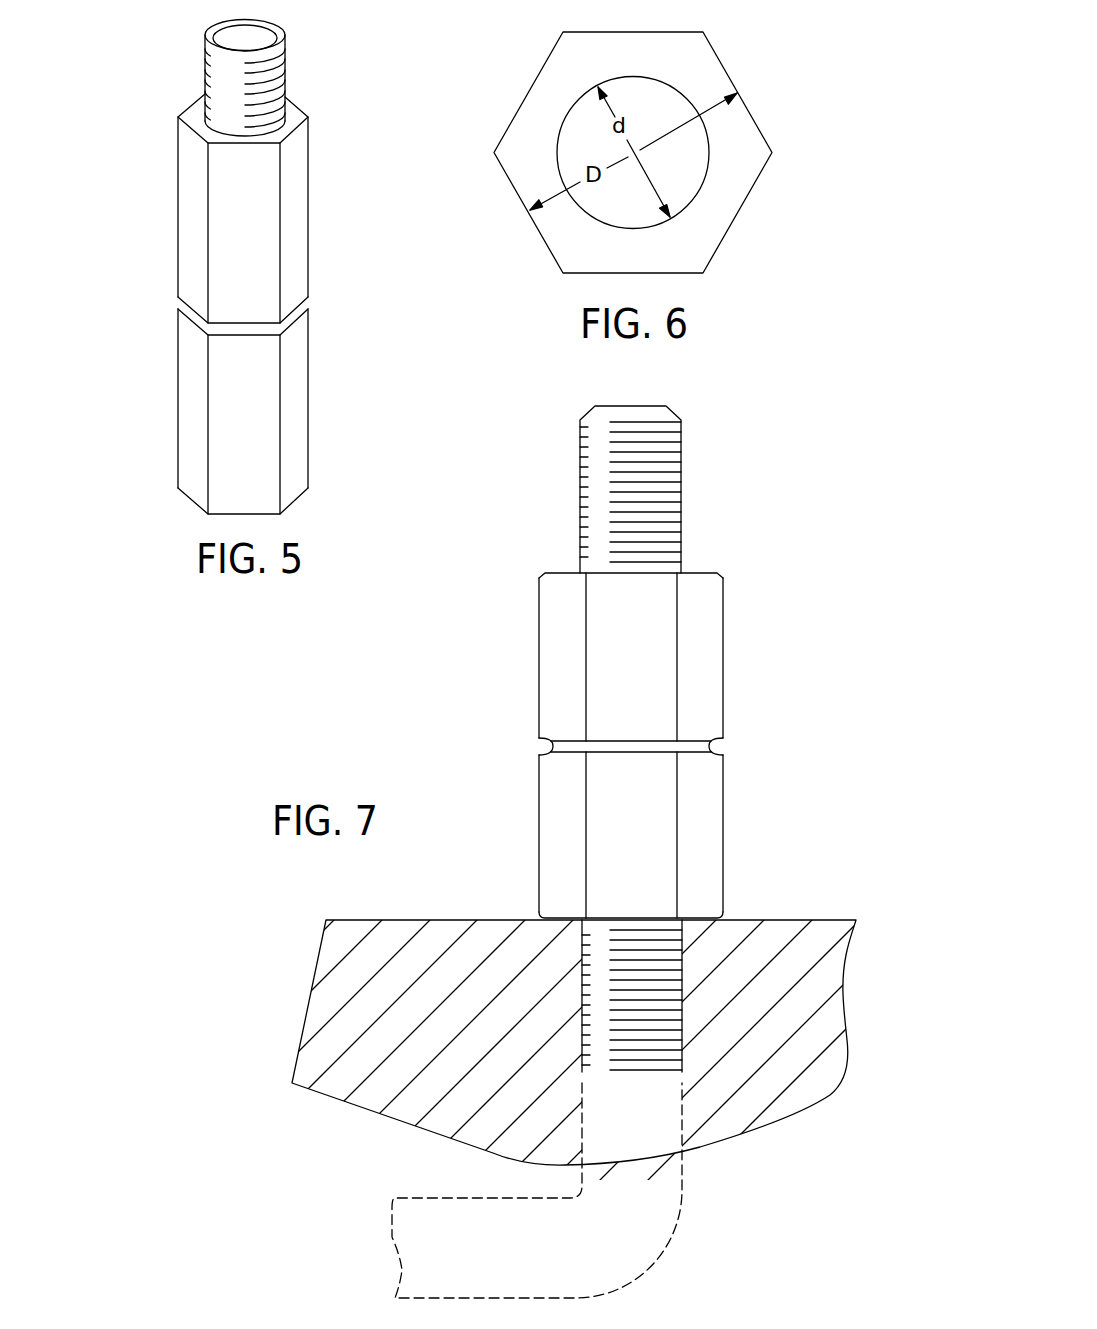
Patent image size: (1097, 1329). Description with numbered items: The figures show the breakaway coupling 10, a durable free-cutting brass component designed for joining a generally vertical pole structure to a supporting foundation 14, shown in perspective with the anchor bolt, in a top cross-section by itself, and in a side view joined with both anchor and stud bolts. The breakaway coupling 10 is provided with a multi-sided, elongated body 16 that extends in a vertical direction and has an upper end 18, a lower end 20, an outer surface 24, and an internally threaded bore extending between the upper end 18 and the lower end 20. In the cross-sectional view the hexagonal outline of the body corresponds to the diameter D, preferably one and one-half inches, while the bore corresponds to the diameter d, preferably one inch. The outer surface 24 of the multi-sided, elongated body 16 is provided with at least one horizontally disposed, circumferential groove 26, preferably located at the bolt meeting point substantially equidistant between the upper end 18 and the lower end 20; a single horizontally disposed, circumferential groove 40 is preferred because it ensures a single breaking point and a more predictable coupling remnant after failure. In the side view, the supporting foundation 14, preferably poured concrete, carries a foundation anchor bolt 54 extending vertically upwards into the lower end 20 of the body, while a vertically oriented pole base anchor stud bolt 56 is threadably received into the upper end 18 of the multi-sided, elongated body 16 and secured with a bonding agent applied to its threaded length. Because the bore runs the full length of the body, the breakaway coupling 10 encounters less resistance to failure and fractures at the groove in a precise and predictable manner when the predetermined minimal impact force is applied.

In FIG. 5, the breakaway coupling 10 is at (127, 212).
In FIG. 7, the breakaway coupling 10 is at (462, 671).
In FIG. 7, the supporting foundation 14 is at (314, 962).
In FIG. 5, the multi-sided, elongated body 16 is at (313, 213).
In FIG. 7, the multi-sided, elongated body 16 is at (727, 648).
In FIG. 5, the upper end 18 is at (170, 112).
In FIG. 7, the upper end 18 is at (534, 573).
In FIG. 5, the lower end 20 is at (175, 489).
In FIG. 7, the lower end 20 is at (537, 915).
In FIG. 5, the outer surface 24 is at (313, 425).
In FIG. 7, the outer surface 24 is at (727, 843).
In FIG. 5, the horizontally disposed, circumferential groove 26 is at (170, 307).
In FIG. 7, the horizontally disposed, circumferential groove 26 is at (524, 748).
In FIG. 5, the single horizontally disposed, circumferential groove 40 is at (318, 300).
In FIG. 7, the single horizontally disposed, circumferential groove 40 is at (741, 741).
In FIG. 7, the foundation anchor bolt 54 is at (686, 1020).
In FIG. 5, the vertically oriented pole base anchor stud bolt 56 is at (289, 59).
In FIG. 7, the vertically oriented pole base anchor stud bolt 56 is at (686, 487).